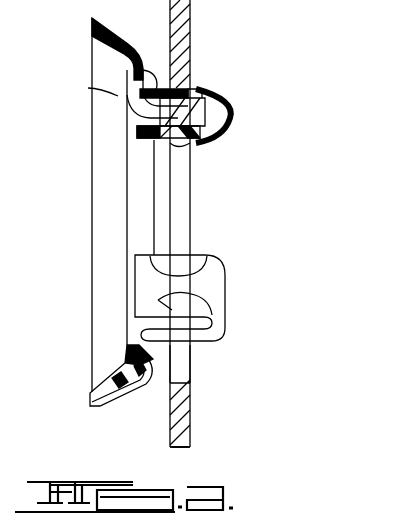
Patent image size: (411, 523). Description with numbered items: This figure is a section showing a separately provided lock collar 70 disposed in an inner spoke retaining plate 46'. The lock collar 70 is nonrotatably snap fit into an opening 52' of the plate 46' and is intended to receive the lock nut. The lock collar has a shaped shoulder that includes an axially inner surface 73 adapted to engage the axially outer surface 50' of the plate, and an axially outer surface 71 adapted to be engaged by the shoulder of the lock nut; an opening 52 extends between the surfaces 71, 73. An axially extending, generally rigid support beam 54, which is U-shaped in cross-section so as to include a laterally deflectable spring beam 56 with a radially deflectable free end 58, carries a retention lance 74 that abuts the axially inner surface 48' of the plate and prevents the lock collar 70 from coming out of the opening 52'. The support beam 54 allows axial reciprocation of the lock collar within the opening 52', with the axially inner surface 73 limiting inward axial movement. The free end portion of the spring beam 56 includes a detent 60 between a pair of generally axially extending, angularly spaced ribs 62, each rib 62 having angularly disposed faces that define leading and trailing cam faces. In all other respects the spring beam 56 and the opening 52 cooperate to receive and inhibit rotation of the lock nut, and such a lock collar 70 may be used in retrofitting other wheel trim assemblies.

The inner spoke retaining plate 46' is at (206, 223).
The axially inner surface 48' is at (209, 433).
The axially outer surface 50' is at (146, 442).
The opening 52 is at (194, 197).
The opening 52' is at (203, 364).
The support beam 54 is at (160, 110).
The spring beam 56 is at (160, 120).
The free end 58 is at (137, 134).
The detent 60 is at (177, 283).
The rib 62 is at (179, 146).
The lock collar 70 is at (90, 394).
The axially outer surface 71 is at (128, 352).
The axially inner surface 73 is at (137, 380).
The retention lance 74 is at (198, 86).